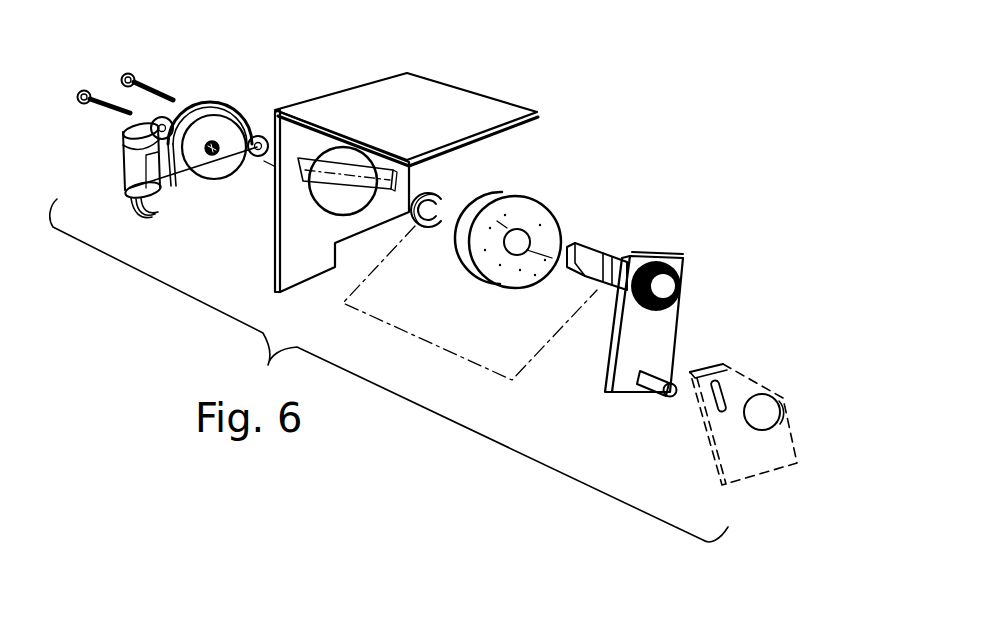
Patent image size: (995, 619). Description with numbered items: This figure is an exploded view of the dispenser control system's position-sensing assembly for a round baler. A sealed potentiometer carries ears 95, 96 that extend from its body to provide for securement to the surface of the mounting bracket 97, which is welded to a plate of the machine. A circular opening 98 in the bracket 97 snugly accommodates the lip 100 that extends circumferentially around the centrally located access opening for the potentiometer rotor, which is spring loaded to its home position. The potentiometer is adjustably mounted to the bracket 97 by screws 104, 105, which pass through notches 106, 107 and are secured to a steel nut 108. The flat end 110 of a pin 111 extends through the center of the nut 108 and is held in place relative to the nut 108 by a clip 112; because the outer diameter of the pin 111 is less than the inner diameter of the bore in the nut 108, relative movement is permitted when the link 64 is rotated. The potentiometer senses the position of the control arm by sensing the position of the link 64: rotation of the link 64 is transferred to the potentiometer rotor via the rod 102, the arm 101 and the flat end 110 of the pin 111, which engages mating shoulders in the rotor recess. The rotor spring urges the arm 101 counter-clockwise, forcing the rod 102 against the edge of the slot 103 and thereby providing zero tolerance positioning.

The link 64 is at (745, 462).
The ear 95 is at (259, 128).
The ear 96 is at (140, 125).
The bracket 97 is at (432, 107).
The circular opening 98 is at (335, 206).
The lip 100 is at (198, 182).
The arm 101 is at (650, 323).
The rod 102 is at (658, 393).
The slot 103 is at (724, 386).
The screw 104 is at (148, 81).
The screw 105 is at (98, 84).
The notch 106 is at (396, 173).
The notch 107 is at (318, 160).
The steel nut 108 is at (537, 210).
The flat end 110 is at (582, 262).
The pin 111 is at (665, 286).
The clip 112 is at (423, 228).